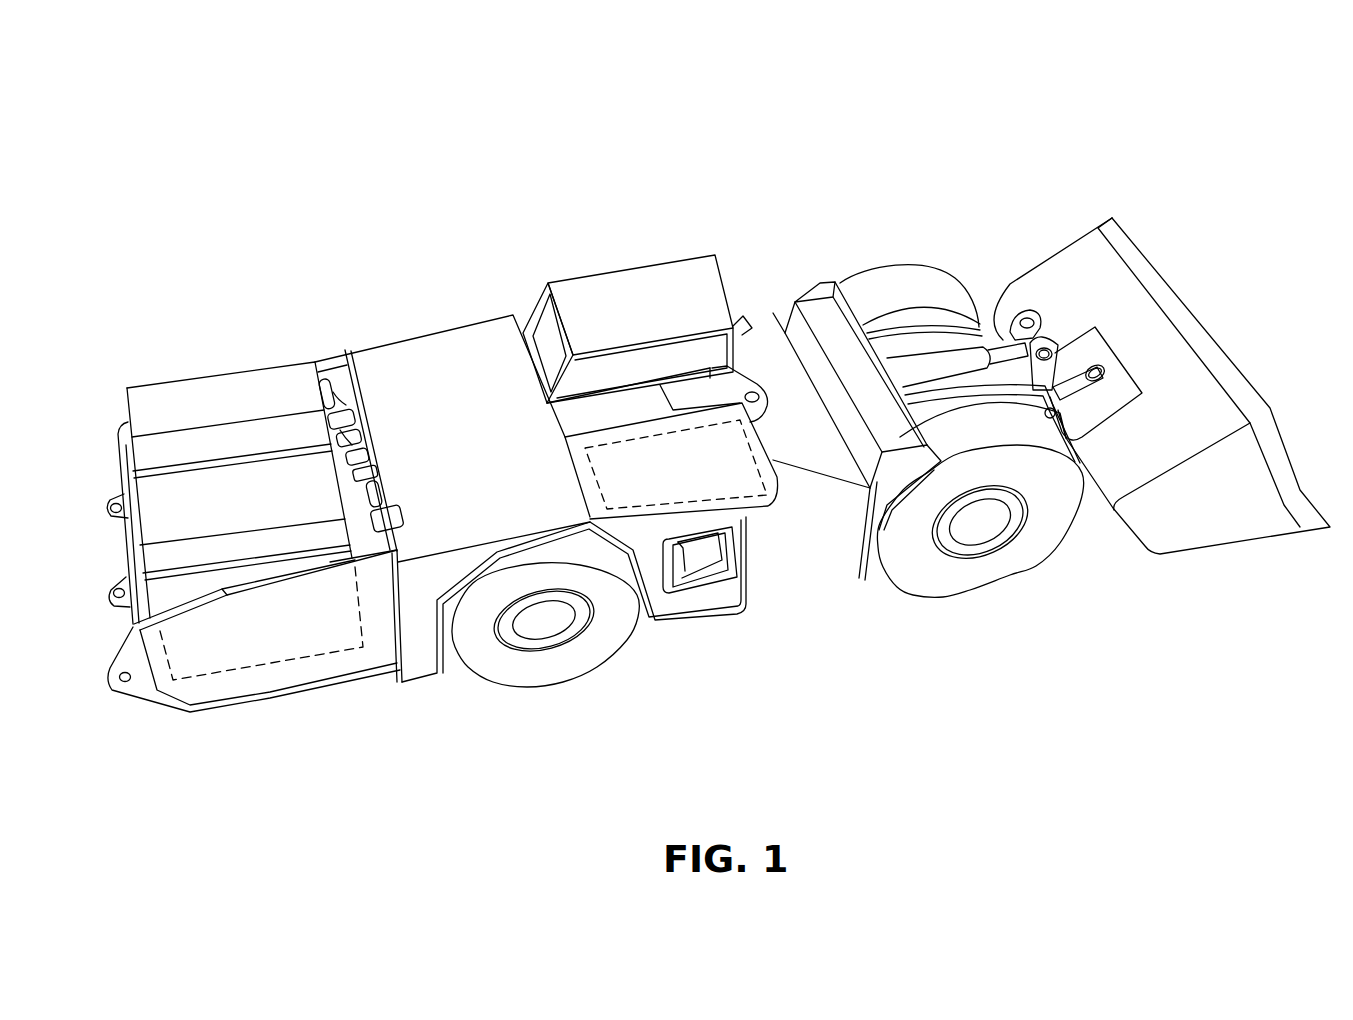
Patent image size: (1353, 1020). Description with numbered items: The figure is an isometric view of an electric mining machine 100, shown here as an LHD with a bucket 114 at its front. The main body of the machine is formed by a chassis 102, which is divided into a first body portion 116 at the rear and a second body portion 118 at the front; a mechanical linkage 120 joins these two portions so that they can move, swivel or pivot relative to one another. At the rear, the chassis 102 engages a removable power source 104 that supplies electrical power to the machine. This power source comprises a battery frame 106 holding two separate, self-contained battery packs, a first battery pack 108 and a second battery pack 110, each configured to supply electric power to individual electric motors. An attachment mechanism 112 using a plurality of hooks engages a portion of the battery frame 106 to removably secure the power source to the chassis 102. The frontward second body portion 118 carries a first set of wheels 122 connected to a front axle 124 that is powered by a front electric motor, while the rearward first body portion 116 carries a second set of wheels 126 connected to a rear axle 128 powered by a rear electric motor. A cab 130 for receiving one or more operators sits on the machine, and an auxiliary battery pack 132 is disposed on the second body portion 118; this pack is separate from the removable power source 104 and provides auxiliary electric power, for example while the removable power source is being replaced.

The electric mining machine 100 is at (591, 152).
The chassis 102 is at (448, 329).
The removable power source 104 is at (302, 734).
The battery frame 106 is at (231, 689).
The first battery pack 108 is at (236, 412).
The second battery pack 110 is at (213, 507).
The attachment mechanism 112 is at (347, 385).
The bucket 114 is at (1197, 318).
The first body portion 116 is at (417, 775).
The second body portion 118 is at (1133, 617).
The mechanical linkage 120 is at (745, 375).
The first set of wheels 122 is at (906, 233).
The front axle 124 is at (985, 528).
The second set of wheels 126 is at (473, 700).
The rear axle 128 is at (548, 632).
The cab 130 is at (665, 315).
The auxiliary battery pack 132 is at (636, 470).